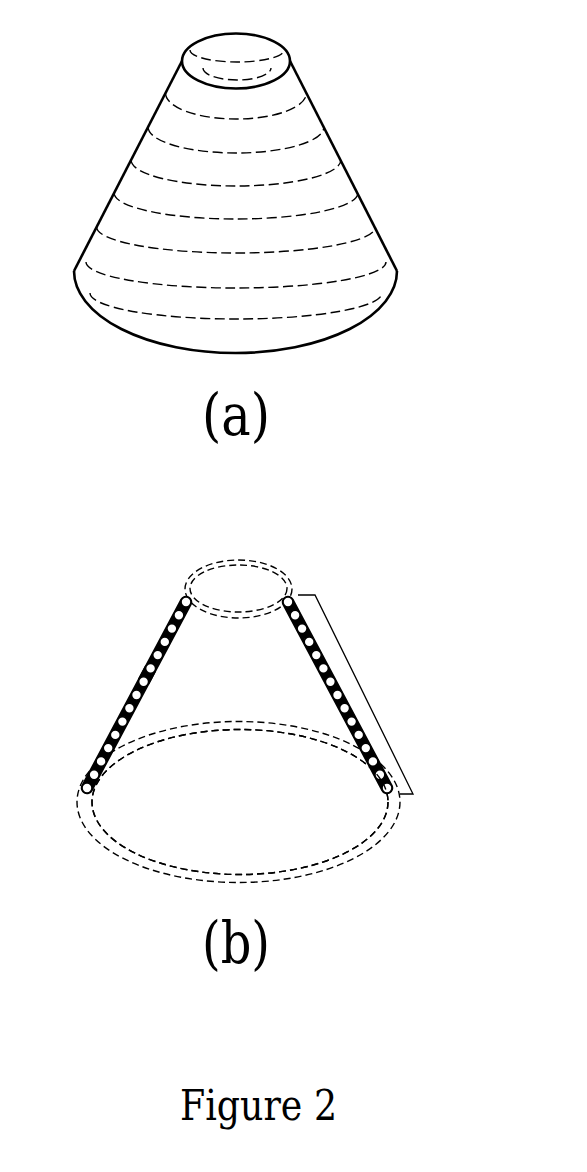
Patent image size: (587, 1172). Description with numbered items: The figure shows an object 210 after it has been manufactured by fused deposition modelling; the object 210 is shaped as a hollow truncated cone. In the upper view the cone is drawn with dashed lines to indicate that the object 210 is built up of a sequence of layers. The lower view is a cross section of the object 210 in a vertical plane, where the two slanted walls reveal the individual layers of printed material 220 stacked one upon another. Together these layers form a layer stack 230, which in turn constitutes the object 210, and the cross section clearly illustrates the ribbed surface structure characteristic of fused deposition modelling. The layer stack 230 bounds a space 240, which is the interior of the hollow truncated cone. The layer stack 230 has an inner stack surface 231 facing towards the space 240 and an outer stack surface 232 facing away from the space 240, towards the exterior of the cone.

The object 210 is at (155, 66).
The layers of printed material 220 is at (143, 695).
The layer stack 230 is at (362, 690).
The inner stack surface 231 is at (147, 690).
The outer stack surface 232 is at (143, 671).
The space 240 is at (258, 773).